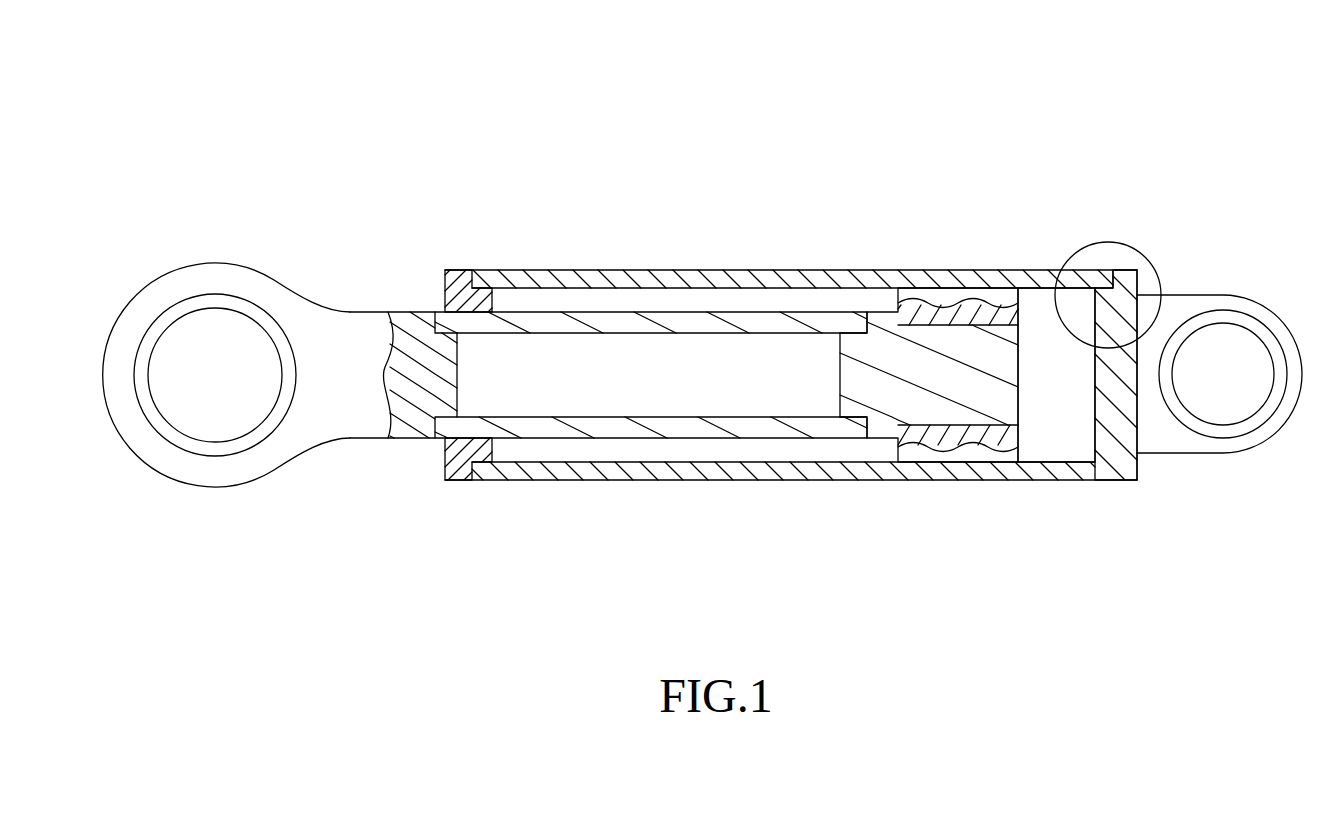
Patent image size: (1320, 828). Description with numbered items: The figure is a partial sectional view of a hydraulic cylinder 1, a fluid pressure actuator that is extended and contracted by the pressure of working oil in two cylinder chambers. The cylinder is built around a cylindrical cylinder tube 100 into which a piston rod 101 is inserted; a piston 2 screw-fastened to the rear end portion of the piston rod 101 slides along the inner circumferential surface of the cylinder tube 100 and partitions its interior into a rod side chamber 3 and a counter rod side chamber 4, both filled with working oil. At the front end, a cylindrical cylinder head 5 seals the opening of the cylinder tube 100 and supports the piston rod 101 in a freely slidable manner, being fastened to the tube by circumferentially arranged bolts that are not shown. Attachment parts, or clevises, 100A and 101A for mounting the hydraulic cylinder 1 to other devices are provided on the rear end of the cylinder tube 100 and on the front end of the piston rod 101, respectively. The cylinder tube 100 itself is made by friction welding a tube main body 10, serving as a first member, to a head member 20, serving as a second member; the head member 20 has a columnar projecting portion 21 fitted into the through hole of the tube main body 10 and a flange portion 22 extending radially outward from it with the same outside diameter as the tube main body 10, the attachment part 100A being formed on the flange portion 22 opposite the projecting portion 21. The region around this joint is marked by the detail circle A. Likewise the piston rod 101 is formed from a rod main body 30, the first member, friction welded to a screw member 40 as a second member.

The hydraulic cylinder 1 is at (1166, 122).
The cylinder tube 100 is at (889, 264).
The attachment part 100A is at (1232, 453).
The piston rod 101 is at (608, 460).
The attachment part 101A is at (217, 487).
The tube main body 10 is at (791, 391).
The head member 20 is at (1130, 393).
The projecting portion 21 is at (1100, 437).
The flange portion 22 is at (1125, 463).
The piston 2 is at (953, 385).
The rod side chamber 3 is at (743, 448).
The counter rod side chamber 4 is at (1045, 390).
The cylinder head 5 is at (465, 453).
The rod main body 30 is at (528, 440).
The screw member 40 is at (380, 440).
The detail region A is at (1155, 265).